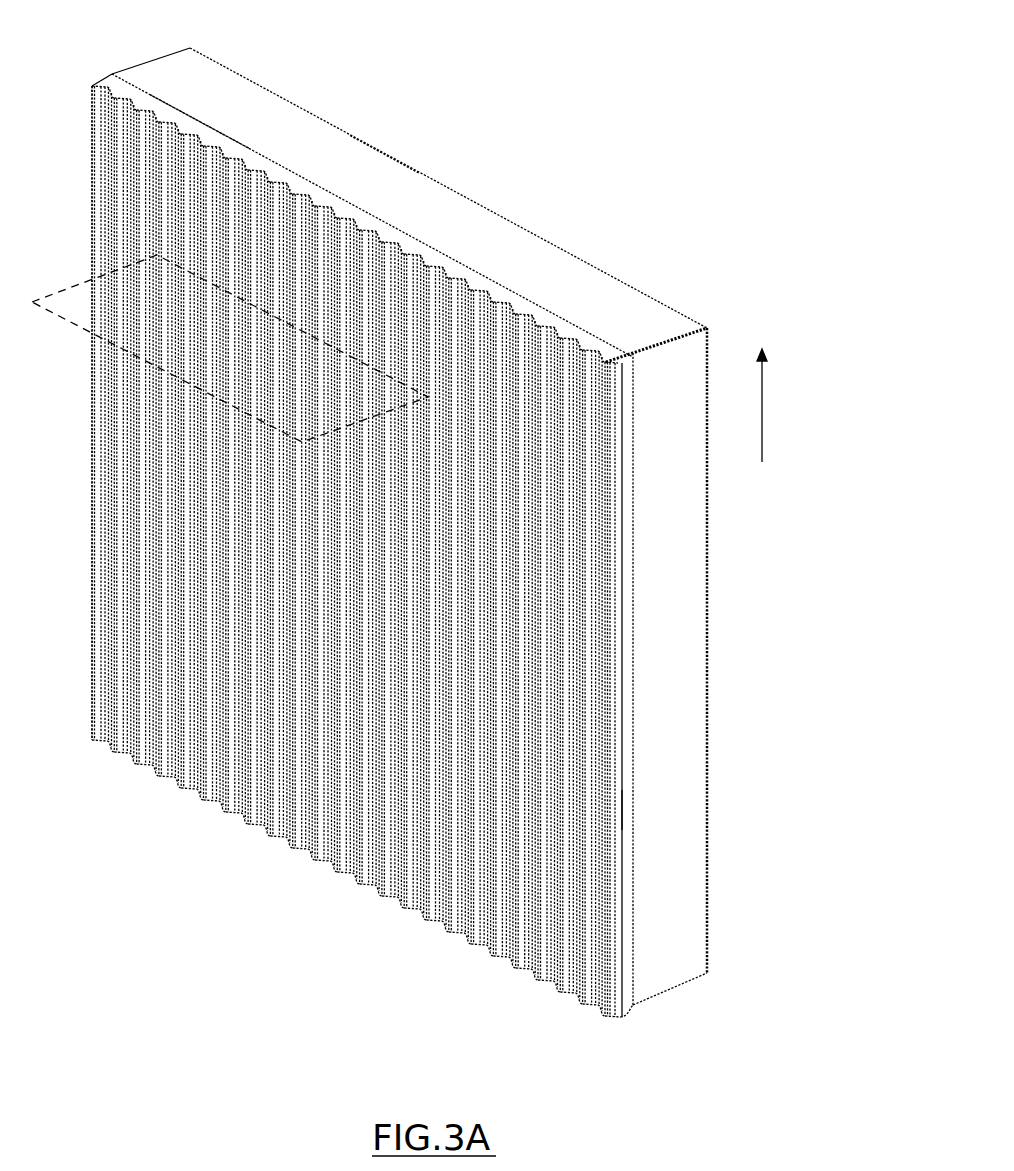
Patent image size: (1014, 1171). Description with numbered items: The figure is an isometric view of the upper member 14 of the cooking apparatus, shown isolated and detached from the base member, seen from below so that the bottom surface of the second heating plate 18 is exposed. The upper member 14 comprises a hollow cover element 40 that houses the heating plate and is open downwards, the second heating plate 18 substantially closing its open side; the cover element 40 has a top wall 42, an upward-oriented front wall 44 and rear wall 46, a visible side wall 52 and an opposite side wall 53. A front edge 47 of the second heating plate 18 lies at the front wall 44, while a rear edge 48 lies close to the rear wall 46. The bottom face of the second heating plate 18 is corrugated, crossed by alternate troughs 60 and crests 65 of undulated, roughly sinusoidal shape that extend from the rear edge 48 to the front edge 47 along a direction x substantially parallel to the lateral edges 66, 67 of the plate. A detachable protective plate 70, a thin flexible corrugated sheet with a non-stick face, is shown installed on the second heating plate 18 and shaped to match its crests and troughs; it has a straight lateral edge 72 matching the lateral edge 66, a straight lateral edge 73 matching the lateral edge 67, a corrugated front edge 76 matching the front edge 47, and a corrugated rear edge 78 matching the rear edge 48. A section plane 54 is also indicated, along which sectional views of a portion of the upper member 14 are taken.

The upper member 14 is at (620, 92).
The second heating plate 18 is at (535, 312).
The cover element 40 is at (705, 330).
The top wall 42 is at (464, 195).
The front wall 44 is at (382, 168).
The rear wall 46 is at (669, 989).
The front edge 47 is at (203, 130).
The rear edge 48 is at (561, 993).
The side wall 52 is at (682, 685).
The side wall 53 is at (149, 65).
The section plane 54 is at (230, 348).
The troughs 60 is at (270, 835).
The crests 65 is at (368, 886).
The lateral edge 66 is at (89, 187).
The lateral edge 67 is at (627, 545).
The protective plate 70 is at (91, 87).
The straight lateral edge 72 is at (90, 431).
The straight lateral edge 73 is at (617, 810).
The corrugated front edge 76 is at (268, 180).
The corrugated rear edge 78 is at (455, 938).